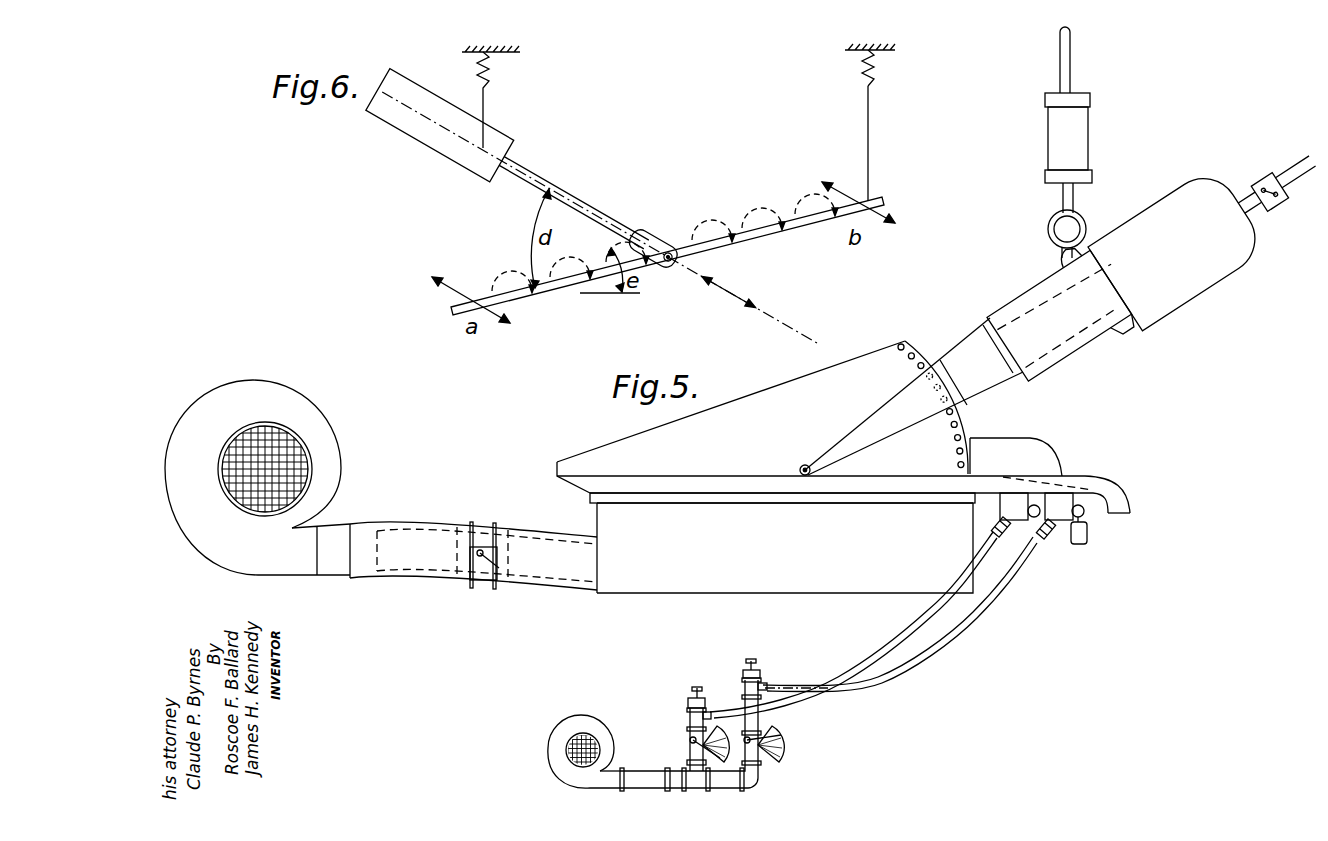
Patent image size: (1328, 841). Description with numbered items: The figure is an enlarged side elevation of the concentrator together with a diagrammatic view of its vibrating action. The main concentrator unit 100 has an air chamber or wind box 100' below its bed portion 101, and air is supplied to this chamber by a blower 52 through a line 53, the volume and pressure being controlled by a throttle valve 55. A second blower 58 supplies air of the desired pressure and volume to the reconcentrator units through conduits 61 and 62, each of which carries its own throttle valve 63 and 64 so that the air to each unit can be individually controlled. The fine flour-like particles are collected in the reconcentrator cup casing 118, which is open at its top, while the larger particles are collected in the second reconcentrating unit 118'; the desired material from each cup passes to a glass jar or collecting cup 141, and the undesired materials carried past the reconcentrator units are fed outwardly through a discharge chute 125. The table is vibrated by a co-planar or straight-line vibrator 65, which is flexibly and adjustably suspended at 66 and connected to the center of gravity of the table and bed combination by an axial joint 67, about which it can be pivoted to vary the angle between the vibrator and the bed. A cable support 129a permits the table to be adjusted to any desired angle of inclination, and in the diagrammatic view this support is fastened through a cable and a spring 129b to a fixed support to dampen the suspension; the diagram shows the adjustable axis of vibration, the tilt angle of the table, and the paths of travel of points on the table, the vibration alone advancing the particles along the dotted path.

In FIG. 5, the blower 52 is at (333, 459).
In FIG. 5, the line 53 is at (416, 529).
In FIG. 5, the throttle valve 55 is at (482, 580).
In FIG. 5, the blower 58 is at (585, 710).
In FIG. 5, the conduit 61 is at (857, 660).
In FIG. 5, the conduit 62 is at (940, 644).
In FIG. 5, the throttle valve 63 is at (694, 745).
In FIG. 5, the throttle valve 64 is at (758, 745).
In FIG. 6, the co-planar vibrator 65 is at (505, 146).
In FIG. 5, the co-planar vibrator 65 is at (1142, 222).
In FIG. 5, the suspension 66 is at (1072, 72).
In FIG. 5, the axial joint 67 is at (804, 464).
In FIG. 6, the main concentrator unit 100 is at (667, 246).
In FIG. 5, the main concentrator unit 100 is at (571, 548).
In FIG. 5, the wind box 100' is at (782, 555).
In FIG. 5, the bed portion 101 is at (707, 490).
In FIG. 5, the reconcentrator cup casing 118 is at (982, 510).
In FIG. 5, the second reconcentrating unit 118' is at (1064, 533).
In FIG. 5, the discharge chute 125 is at (1118, 498).
In FIG. 6, the cable support 129a is at (869, 130).
In FIG. 6, the spring 129b is at (872, 68).
In FIG. 5, the collecting cup 141 is at (1088, 536).